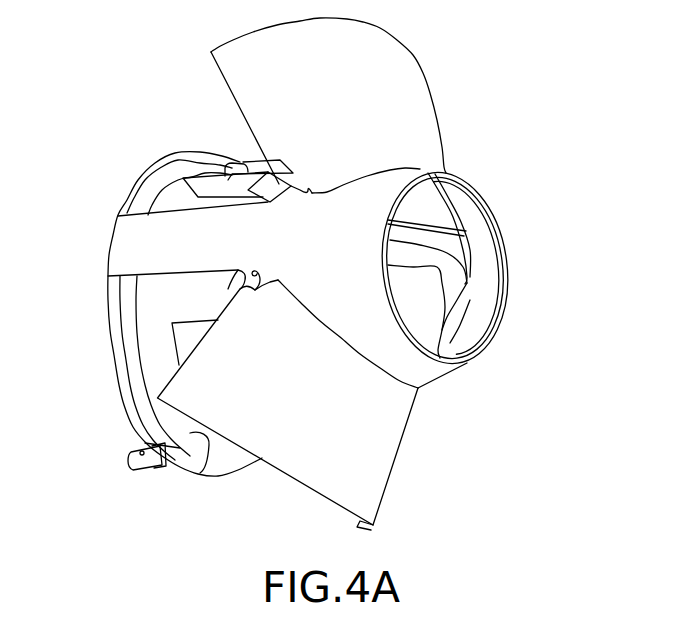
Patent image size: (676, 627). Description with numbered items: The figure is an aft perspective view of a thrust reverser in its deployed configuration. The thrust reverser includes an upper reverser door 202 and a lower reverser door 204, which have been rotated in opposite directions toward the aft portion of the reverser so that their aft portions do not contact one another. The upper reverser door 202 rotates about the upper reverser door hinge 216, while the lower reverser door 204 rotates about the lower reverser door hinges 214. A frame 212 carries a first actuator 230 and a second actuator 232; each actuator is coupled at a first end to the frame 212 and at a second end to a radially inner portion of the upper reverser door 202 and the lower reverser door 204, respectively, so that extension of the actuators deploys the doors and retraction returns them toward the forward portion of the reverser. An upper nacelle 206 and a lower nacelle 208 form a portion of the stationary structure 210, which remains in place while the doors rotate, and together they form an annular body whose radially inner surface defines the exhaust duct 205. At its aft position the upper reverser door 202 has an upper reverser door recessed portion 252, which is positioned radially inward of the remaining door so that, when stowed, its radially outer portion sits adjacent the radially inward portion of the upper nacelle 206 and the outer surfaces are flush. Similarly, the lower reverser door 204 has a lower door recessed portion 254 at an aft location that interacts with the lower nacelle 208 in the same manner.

The upper reverser door 202 is at (365, 102).
The lower reverser door 204 is at (318, 414).
The exhaust duct 205 is at (485, 287).
The upper nacelle 206 is at (408, 167).
The lower nacelle 208 is at (428, 372).
The stationary structure 210 is at (283, 246).
The frame 212 is at (128, 192).
The lower reverser door hinges 214 is at (253, 274).
The upper reverser door hinge 216 is at (300, 187).
The first actuator 230 is at (240, 163).
The second actuator 232 is at (175, 470).
The upper reverser door recessed portion 252 is at (415, 238).
The lower door recessed portion 254 is at (423, 277).